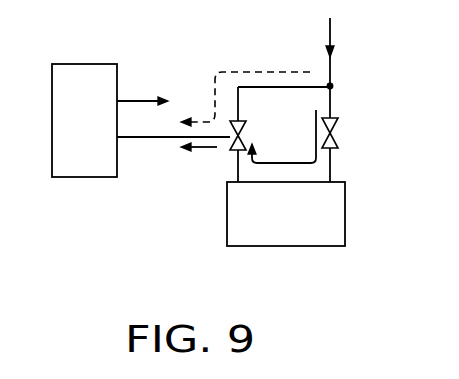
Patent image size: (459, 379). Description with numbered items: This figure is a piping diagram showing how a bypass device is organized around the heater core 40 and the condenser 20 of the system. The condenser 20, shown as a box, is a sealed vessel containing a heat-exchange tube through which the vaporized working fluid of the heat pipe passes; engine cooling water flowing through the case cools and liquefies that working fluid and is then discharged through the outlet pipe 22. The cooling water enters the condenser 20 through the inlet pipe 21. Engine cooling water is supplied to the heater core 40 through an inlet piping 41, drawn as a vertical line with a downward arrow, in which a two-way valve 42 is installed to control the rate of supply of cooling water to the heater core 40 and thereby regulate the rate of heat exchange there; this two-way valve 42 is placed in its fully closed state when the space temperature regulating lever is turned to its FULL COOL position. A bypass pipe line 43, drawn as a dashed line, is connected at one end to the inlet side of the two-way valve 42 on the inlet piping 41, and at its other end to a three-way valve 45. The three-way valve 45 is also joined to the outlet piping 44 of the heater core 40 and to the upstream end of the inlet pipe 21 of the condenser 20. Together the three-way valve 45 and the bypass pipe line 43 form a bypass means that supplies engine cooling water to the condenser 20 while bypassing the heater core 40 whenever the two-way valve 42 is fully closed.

The condenser 20 is at (84, 177).
The inlet pipe 21 is at (135, 138).
The outlet pipe 22 is at (140, 99).
The heater core 40 is at (287, 247).
The inlet piping 41 is at (332, 73).
The two-way valve 42 is at (337, 128).
The bypass pipe line 43 is at (270, 84).
The outlet piping 44 is at (238, 162).
The three-way valve 45 is at (247, 131).